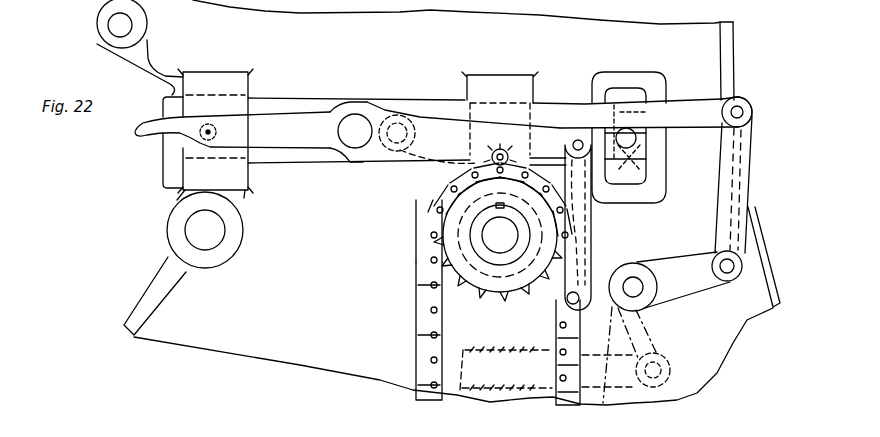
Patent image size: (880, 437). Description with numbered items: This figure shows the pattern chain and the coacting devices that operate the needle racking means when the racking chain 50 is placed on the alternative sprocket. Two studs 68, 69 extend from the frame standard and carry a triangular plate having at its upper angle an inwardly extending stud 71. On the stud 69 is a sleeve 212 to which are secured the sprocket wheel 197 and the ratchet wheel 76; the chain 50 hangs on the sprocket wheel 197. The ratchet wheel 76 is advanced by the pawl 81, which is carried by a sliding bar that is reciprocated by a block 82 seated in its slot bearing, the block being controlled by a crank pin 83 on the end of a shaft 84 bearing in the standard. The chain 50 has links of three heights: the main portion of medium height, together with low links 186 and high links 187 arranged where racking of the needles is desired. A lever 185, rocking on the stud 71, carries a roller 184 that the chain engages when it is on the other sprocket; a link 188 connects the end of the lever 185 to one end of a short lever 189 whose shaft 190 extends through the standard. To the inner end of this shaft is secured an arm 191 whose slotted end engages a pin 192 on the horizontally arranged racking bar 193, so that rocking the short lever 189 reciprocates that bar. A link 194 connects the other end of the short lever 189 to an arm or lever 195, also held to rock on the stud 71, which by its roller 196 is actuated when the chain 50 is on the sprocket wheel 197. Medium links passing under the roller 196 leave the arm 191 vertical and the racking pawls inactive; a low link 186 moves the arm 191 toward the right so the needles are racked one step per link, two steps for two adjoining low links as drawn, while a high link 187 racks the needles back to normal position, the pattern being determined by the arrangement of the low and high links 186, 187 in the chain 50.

The pattern chain 50 is at (440, 395).
The stud 68 is at (203, 229).
The stud 69 is at (505, 236).
The stud 71 is at (352, 140).
The ratchet wheel 76 is at (468, 292).
The pawl 81 is at (440, 142).
The block 82 is at (641, 151).
The crank pin 83 is at (636, 139).
The shaft 84 is at (643, 160).
The roller 184 is at (206, 133).
The lever 185 is at (358, 106).
The low links 186 is at (418, 318).
The high links 187 is at (417, 231).
The link 188 is at (593, 213).
The short lever 189 is at (697, 282).
The shaft 190 is at (636, 285).
The arm 191 is at (664, 332).
The pin 192 is at (675, 399).
The bar 193 is at (603, 403).
The link 194 is at (748, 185).
The arm or lever 195 is at (718, 106).
The roller 196 is at (501, 155).
The sprocket wheel 197 is at (498, 296).
The sleeve 212 is at (478, 246).